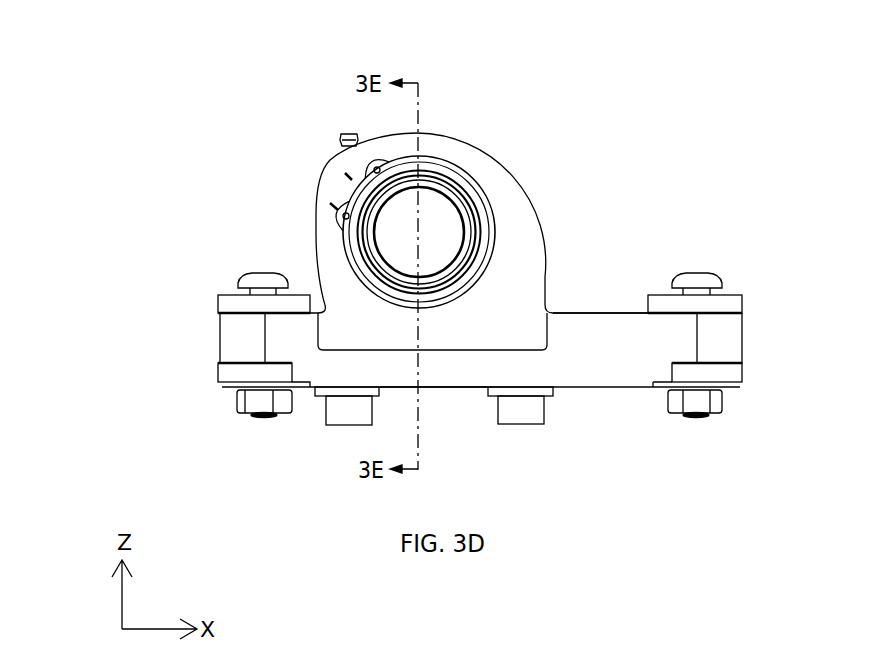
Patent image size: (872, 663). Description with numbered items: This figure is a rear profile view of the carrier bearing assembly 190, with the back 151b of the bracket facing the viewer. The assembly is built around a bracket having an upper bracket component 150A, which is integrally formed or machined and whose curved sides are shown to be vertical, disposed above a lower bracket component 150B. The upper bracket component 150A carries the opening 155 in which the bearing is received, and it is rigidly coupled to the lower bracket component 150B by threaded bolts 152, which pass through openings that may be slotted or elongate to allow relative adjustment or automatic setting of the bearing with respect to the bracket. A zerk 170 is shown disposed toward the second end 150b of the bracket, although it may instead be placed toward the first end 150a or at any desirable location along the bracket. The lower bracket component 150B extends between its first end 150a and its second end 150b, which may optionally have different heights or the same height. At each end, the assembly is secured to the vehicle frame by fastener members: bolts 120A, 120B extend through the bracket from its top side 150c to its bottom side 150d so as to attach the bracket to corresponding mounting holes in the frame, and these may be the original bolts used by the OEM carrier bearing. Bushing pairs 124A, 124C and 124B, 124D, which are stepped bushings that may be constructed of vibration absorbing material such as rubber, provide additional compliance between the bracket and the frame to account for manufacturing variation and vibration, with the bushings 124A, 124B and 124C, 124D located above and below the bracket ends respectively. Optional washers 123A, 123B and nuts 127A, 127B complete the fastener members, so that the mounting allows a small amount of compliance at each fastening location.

The carrier bearing assembly 190 is at (515, 92).
The upper bracket component 150A is at (519, 182).
The opening 155 is at (432, 245).
The zerk 170 is at (343, 133).
The back 151b is at (480, 350).
The top side 150c is at (568, 313).
The lower bracket component 150B is at (623, 313).
The bottom side 150d is at (598, 388).
The second end 150b is at (220, 346).
The first end 150a is at (742, 338).
The bolt 120B is at (260, 273).
The bolt 120A is at (698, 282).
The bushing 124B is at (225, 303).
The bushing 124A is at (737, 304).
The bushing 124D is at (218, 372).
The bushing 124C is at (742, 368).
The washer 123B is at (220, 388).
The washer 123A is at (738, 385).
The nut 127B is at (237, 408).
The nut 127A is at (722, 400).
The threaded bolt 152 is at (338, 412).